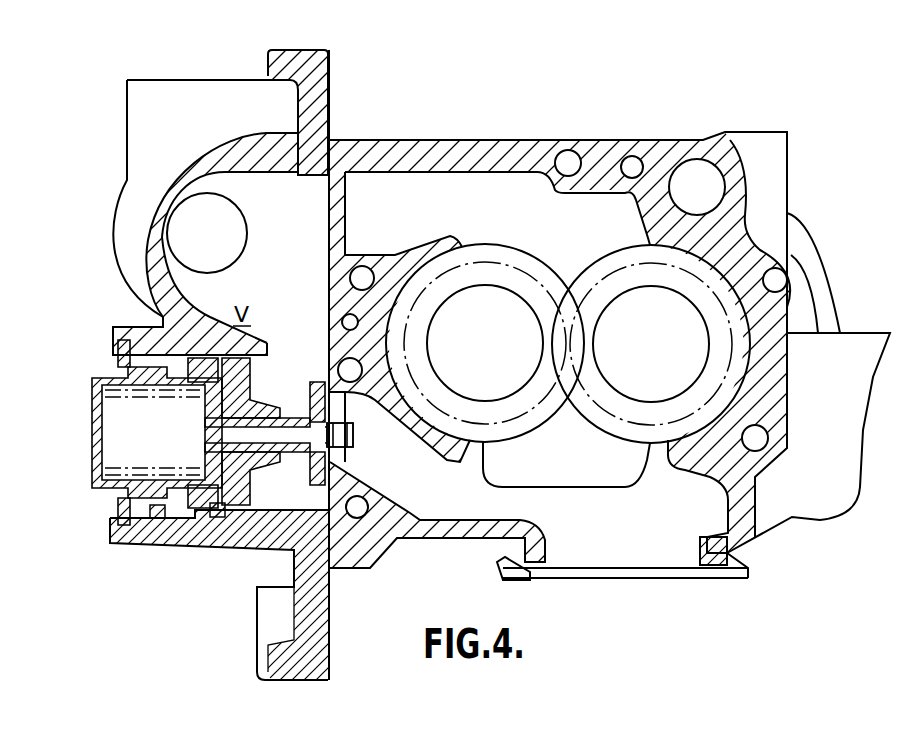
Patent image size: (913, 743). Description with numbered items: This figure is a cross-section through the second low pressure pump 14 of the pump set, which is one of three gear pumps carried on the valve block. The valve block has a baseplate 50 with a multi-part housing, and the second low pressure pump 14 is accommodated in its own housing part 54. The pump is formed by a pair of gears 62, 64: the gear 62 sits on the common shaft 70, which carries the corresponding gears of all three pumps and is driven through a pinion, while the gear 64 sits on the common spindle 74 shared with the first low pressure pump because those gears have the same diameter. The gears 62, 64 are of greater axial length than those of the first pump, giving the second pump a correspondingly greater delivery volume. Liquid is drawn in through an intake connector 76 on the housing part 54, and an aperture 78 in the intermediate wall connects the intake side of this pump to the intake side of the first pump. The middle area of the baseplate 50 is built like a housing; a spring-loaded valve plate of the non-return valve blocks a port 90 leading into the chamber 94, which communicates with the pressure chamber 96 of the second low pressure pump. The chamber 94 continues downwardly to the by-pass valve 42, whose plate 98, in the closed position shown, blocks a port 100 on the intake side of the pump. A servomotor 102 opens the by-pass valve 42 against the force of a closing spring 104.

The second low pressure pump 14 is at (568, 104).
The baseplate 50 is at (302, 66).
The port 90 is at (236, 210).
The chamber 94 is at (301, 292).
The pressure chamber 96 is at (444, 222).
The gear 64 is at (503, 252).
The gear 62 is at (615, 258).
The common spindle 74 is at (500, 374).
The common shaft 70 is at (643, 385).
The aperture 78 is at (586, 475).
The by-pass valve 42 is at (308, 376).
The plate 98 is at (307, 478).
The port 100 is at (345, 475).
The housing part 54 is at (748, 508).
The intake connector 76 is at (572, 575).
The closing spring 104 is at (160, 520).
The servomotor 102 is at (217, 515).